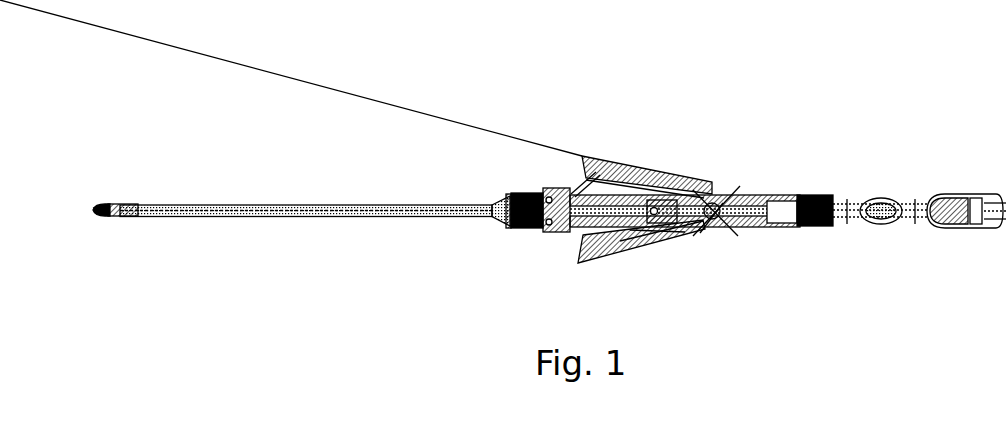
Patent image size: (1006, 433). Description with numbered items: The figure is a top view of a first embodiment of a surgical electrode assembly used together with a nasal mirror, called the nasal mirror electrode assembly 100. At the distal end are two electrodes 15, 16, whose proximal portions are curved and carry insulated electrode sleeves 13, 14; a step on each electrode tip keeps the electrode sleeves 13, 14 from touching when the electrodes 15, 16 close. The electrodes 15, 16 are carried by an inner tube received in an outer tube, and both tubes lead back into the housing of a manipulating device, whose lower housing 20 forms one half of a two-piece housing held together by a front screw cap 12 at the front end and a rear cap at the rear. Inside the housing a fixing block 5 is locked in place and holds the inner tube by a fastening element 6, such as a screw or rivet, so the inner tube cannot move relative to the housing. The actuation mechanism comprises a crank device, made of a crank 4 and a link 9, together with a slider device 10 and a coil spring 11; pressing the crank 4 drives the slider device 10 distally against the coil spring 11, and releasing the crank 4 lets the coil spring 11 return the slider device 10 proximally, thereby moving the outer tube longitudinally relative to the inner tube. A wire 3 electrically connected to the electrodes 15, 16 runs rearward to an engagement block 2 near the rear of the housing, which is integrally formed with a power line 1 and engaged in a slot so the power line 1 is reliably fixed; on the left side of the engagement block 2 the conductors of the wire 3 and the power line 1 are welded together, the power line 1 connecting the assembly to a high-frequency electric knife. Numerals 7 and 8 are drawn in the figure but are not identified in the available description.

The nasal mirror electrode assembly 100 is at (722, 140).
The power line 1 is at (980, 228).
The engagement block 2 is at (790, 228).
The wire 3 is at (760, 228).
The crank 4 is at (722, 229).
The fixing block 5 is at (679, 233).
The fastening element 6 is at (649, 228).
The connecting rod 7 is at (603, 196).
The lower arm 8 is at (576, 245).
The link 9 is at (560, 230).
The slider device 10 is at (533, 228).
The coil spring 11 is at (506, 212).
The front screw cap 12 is at (484, 208).
The electrode sleeve 13 is at (117, 218).
The electrode sleeve 14 is at (111, 218).
The electrode 15 is at (96, 215).
The electrode 16 is at (98, 206).
The lower housing 20 is at (727, 194).